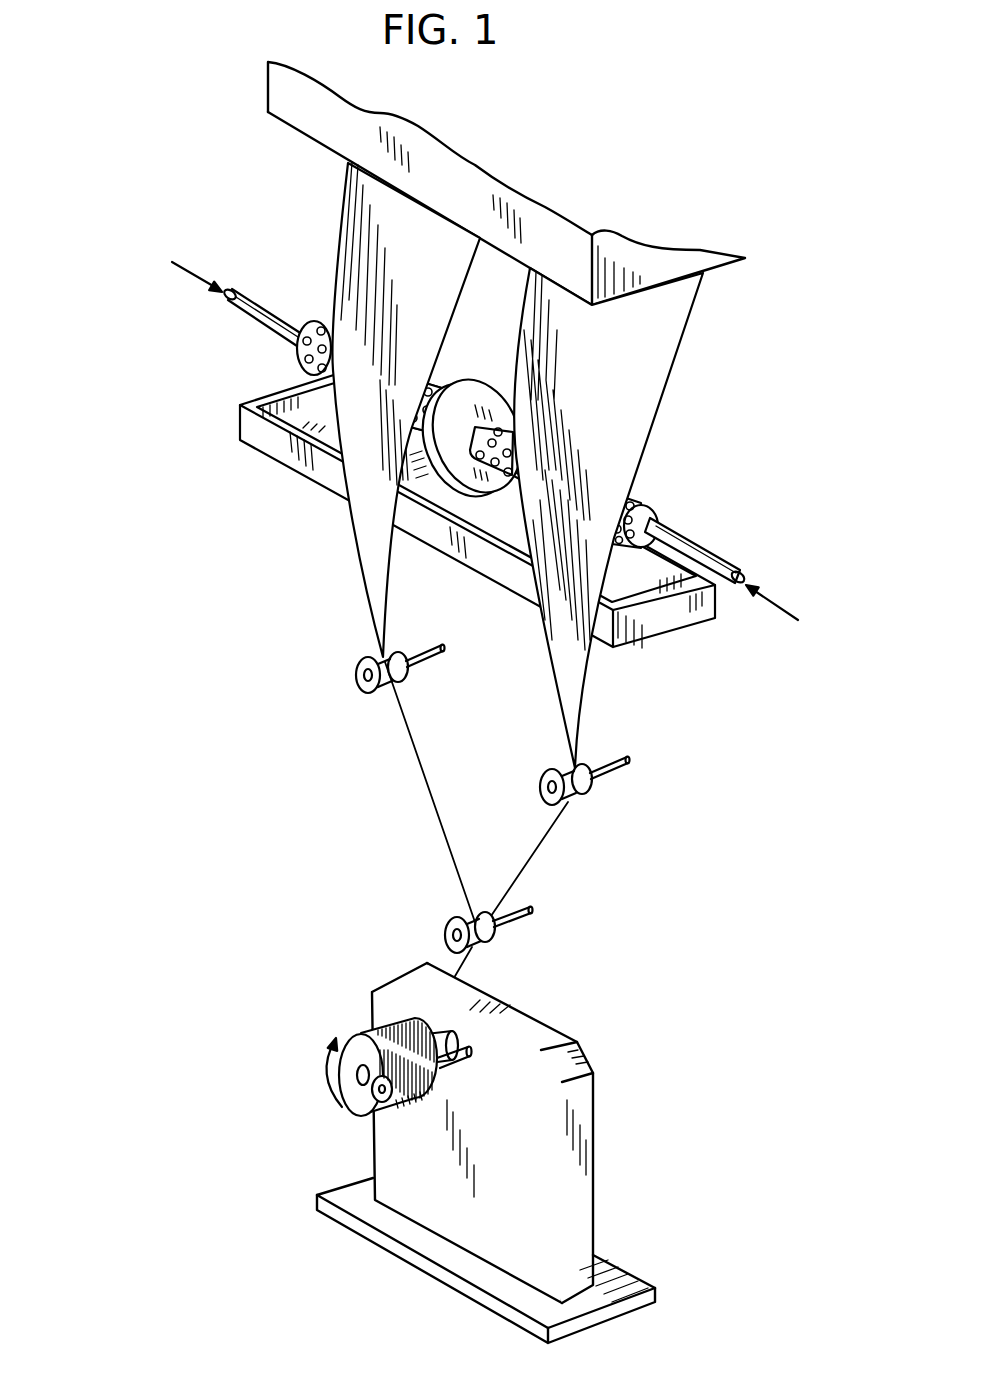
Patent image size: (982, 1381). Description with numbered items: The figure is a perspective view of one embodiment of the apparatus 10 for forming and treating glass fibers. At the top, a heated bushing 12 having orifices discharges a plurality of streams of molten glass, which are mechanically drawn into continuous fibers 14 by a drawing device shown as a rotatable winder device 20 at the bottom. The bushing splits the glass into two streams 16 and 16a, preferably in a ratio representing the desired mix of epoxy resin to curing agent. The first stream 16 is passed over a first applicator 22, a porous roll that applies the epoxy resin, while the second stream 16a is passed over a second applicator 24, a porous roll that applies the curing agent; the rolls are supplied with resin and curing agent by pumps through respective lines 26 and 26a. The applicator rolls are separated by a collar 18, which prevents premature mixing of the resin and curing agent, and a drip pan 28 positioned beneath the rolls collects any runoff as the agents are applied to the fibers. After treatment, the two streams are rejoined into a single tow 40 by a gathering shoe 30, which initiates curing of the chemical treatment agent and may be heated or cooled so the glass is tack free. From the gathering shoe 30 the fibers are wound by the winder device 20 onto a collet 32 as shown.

The apparatus 10 is at (178, 220).
The heated bushing 12 is at (680, 256).
The continuous fibers 14 is at (340, 205).
The first stream 16 is at (333, 268).
The second stream 16a is at (648, 437).
The collar 18 is at (475, 392).
The winder device 20 is at (325, 1025).
The first applicator 22 is at (298, 354).
The second applicator 24 is at (640, 500).
The line 26 is at (243, 315).
The line 26a is at (703, 553).
The drip pan 28 is at (330, 473).
The gathering shoe 30 is at (492, 942).
The collet 32 is at (358, 1107).
The tow 40 is at (422, 968).